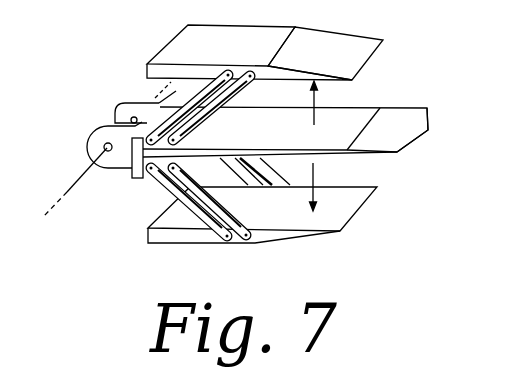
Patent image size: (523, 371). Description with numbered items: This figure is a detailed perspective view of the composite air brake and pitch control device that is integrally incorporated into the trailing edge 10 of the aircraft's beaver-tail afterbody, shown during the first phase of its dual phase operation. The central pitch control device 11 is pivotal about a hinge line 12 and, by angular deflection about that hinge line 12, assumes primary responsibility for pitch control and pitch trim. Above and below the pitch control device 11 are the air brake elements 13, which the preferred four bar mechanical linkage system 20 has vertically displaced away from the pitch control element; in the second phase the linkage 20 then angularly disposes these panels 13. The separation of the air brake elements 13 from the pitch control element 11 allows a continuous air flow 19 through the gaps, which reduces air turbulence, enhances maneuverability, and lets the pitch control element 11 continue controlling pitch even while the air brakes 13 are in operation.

The trailing edge 10 is at (428, 119).
The pitch control device 11 is at (296, 137).
The hinge line 12 is at (68, 190).
The air brake elements 13 is at (268, 56).
The continuous air flow 19 is at (144, 88).
The four bar mechanical linkage system 20 is at (196, 175).